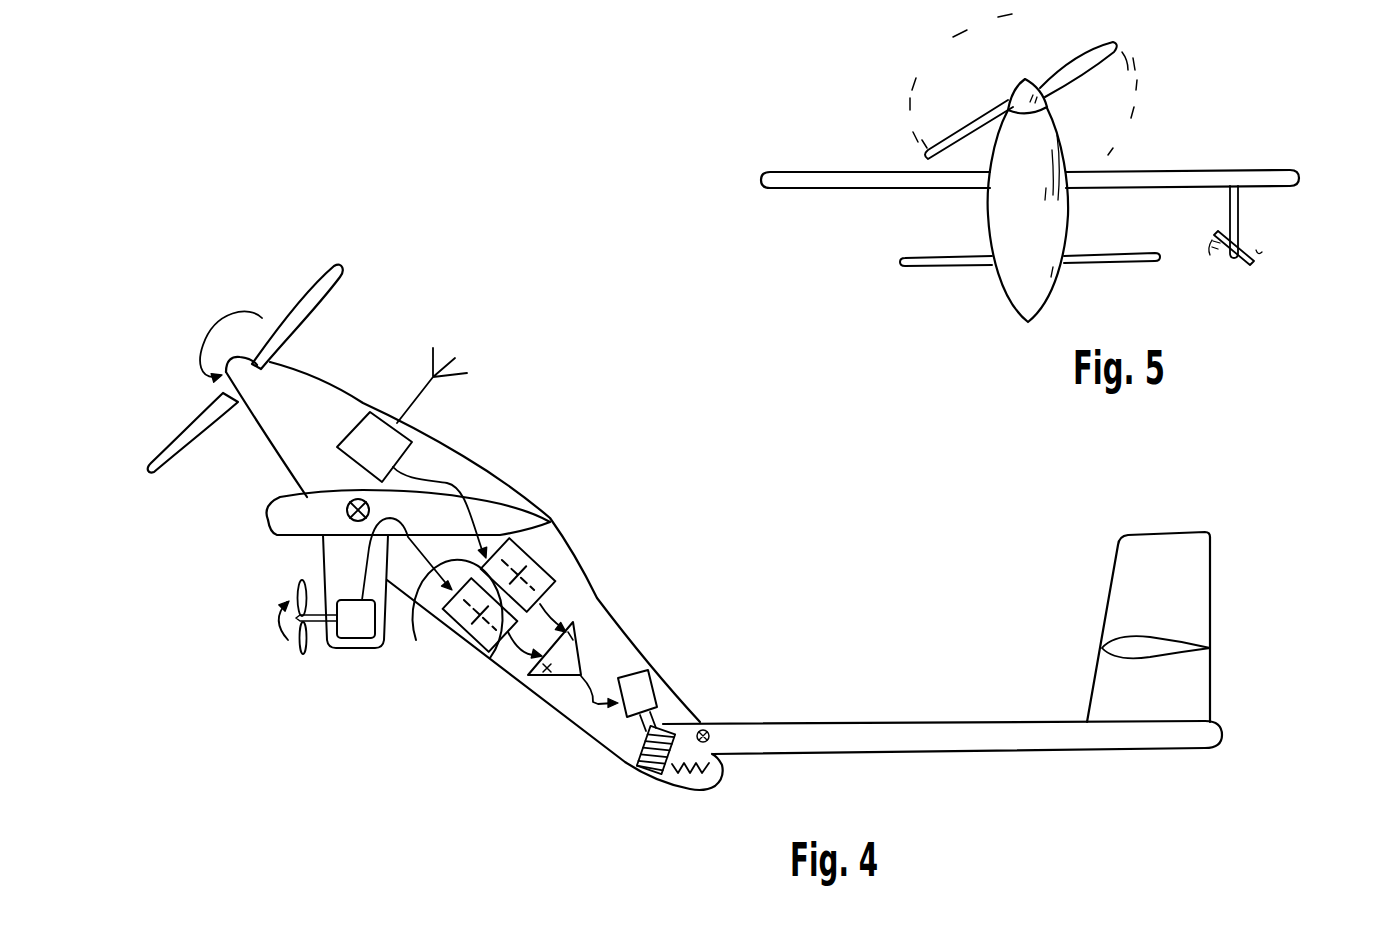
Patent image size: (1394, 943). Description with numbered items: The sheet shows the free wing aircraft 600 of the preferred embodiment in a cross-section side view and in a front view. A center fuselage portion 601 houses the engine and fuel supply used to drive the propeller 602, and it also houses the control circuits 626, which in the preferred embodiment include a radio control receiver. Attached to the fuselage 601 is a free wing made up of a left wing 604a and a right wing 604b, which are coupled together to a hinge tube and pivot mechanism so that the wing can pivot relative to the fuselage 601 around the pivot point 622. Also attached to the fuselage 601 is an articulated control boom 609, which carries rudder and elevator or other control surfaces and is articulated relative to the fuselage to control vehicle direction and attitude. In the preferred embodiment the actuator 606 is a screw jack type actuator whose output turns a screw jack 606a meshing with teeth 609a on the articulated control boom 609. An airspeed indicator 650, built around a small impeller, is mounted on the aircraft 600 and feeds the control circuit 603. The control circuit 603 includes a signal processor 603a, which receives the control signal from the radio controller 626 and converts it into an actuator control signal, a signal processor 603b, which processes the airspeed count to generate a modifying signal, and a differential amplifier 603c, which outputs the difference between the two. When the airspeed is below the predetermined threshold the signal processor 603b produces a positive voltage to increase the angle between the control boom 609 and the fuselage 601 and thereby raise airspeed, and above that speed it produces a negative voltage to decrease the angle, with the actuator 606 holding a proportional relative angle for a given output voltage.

In FIG. 4, the free wing aircraft 600 is at (606, 884).
In FIG. 4, the center fuselage portion 601 is at (545, 713).
In FIG. 4, the propeller 602 is at (346, 266).
In FIG. 4, the control circuit 603 is at (523, 536).
In FIG. 4, the signal processor 603a is at (417, 612).
In FIG. 4, the signal processor 603b is at (495, 657).
In FIG. 4, the differential amplifier 603c is at (578, 638).
In FIG. 5, the wing 604a is at (830, 190).
In FIG. 5, the wing 604b is at (1302, 170).
In FIG. 4, the actuator 606 is at (650, 678).
In FIG. 4, the screw jack 606a is at (645, 767).
In FIG. 4, the articulated control boom 609 is at (897, 745).
In FIG. 4, the teeth 609a is at (685, 790).
In FIG. 4, the pivot point 622 is at (333, 507).
In FIG. 4, the control circuits 626 is at (413, 430).
In FIG. 4, the airspeed indicator 650 is at (315, 655).
In FIG. 5, the airspeed indicator 650 is at (1258, 244).